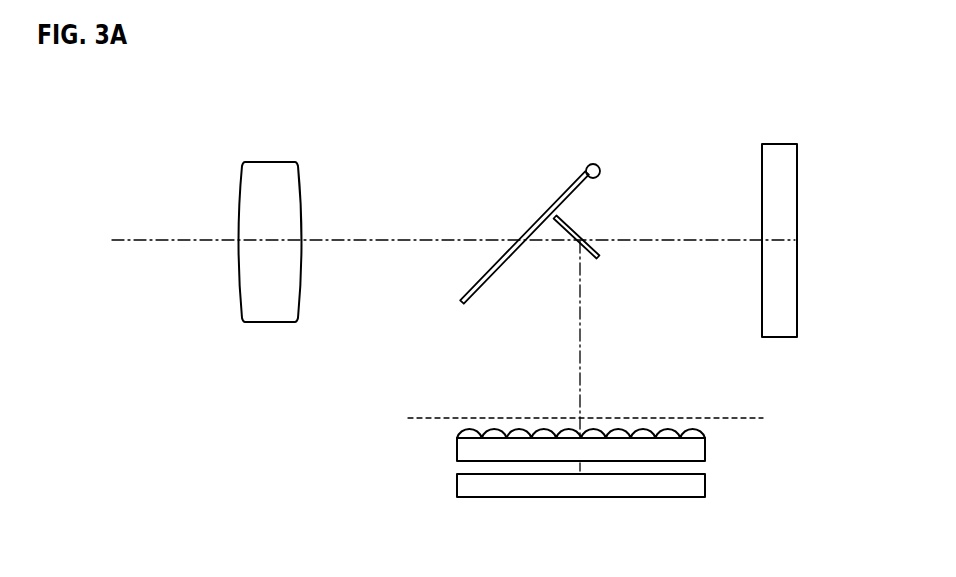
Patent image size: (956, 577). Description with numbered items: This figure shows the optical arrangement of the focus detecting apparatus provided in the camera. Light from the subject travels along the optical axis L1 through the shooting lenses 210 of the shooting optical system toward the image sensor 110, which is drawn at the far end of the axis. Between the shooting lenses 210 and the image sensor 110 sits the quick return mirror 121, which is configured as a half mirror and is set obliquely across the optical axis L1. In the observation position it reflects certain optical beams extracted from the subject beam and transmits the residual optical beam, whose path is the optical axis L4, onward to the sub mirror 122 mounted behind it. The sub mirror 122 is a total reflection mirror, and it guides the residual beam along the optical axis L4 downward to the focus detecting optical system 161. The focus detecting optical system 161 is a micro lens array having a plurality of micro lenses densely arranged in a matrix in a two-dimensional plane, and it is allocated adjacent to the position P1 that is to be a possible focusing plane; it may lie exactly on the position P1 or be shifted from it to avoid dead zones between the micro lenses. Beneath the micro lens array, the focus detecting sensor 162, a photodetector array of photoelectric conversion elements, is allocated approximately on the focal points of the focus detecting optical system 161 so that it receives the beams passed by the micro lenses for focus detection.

The optical axis L1 is at (163, 242).
The shooting lenses 210 is at (288, 177).
The quick return mirror 121 is at (540, 222).
The sub mirror 122 is at (586, 240).
The optical axis L4 is at (582, 357).
The image sensor 110 is at (783, 200).
The position to be a possible focusing plane P1 is at (425, 416).
The focus detecting optical system 161 is at (707, 448).
The focus detecting sensor 162 is at (707, 483).